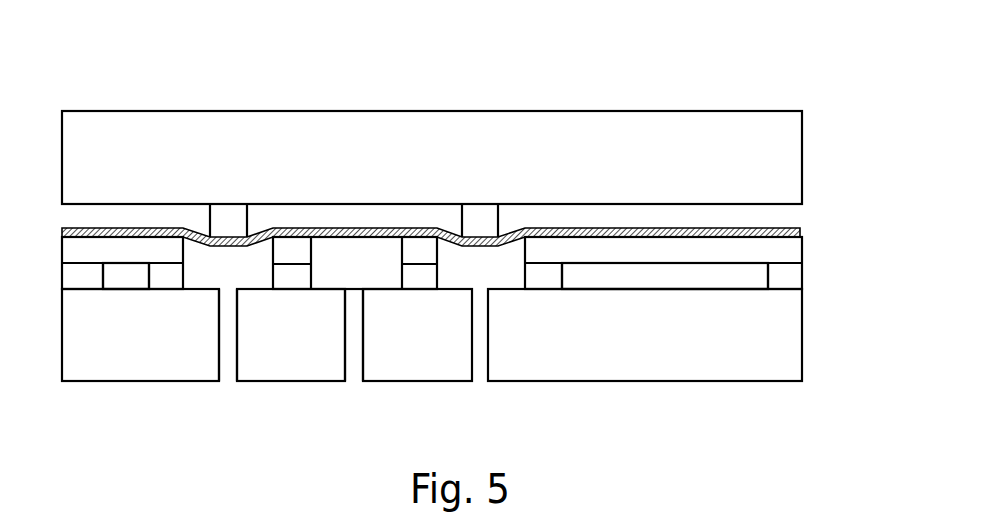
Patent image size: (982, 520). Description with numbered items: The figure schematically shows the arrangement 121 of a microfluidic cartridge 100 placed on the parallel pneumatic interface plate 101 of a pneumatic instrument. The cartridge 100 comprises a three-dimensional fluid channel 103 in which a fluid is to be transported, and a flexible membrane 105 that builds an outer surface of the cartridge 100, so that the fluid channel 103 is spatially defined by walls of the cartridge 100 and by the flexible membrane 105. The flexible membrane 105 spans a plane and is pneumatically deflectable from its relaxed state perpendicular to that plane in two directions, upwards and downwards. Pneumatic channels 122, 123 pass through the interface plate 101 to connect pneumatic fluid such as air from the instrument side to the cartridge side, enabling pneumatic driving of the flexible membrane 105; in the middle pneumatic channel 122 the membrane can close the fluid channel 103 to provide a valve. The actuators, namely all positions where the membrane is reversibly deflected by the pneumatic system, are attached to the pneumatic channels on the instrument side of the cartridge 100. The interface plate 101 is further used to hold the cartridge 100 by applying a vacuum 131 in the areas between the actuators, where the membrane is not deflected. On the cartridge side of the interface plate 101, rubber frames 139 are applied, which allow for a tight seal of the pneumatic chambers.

The MEMS device / transducer assembly 121 is at (775, 93).
The microfluidic cartridge 100 is at (790, 163).
The fluid channel 103 is at (333, 220).
The flexible membrane 105 is at (802, 232).
The rubber frames 139 is at (100, 252).
The vacuum 131 is at (130, 285).
The pneumatic interface plate 101 is at (792, 337).
The pneumatic channel 123 is at (232, 368).
The pneumatic channel 122 is at (360, 365).